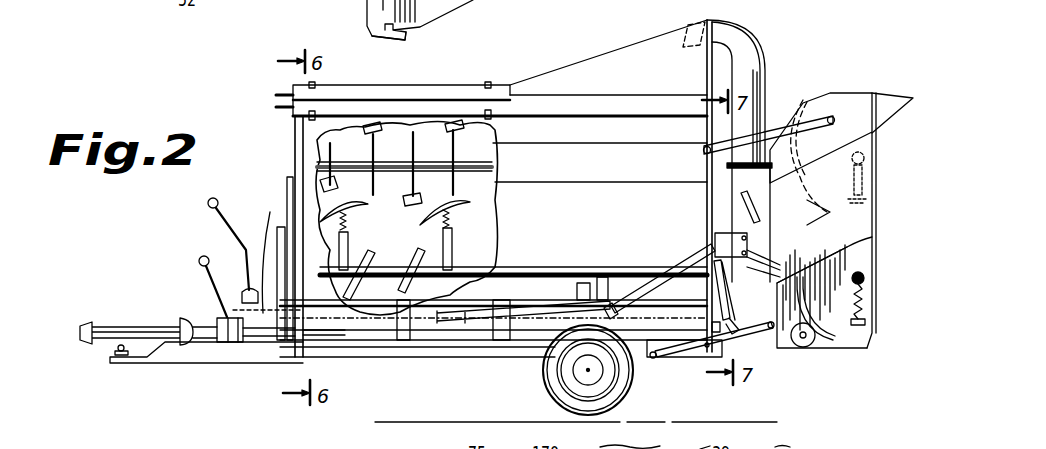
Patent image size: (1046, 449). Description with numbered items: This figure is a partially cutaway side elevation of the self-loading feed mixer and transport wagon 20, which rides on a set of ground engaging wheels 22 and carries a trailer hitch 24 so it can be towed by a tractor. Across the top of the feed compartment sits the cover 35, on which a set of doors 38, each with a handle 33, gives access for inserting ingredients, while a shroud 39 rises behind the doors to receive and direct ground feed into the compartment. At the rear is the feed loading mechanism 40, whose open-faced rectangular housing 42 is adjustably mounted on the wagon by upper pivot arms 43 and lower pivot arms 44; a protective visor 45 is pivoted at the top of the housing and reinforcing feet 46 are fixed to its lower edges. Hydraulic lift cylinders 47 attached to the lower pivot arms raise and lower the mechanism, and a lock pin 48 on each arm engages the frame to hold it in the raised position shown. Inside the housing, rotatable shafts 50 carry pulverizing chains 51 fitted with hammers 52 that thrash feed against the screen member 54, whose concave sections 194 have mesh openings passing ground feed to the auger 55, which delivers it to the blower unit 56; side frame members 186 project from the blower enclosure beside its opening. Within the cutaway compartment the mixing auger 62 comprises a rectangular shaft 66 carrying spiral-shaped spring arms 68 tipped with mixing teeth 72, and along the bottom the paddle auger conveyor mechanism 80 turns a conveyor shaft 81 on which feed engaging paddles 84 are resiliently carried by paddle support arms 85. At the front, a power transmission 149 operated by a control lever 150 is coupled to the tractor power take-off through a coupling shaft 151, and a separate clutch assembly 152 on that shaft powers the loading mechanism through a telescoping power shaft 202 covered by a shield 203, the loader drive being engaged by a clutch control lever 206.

The feed mixer and transport wagon 20 is at (282, 80).
The ground engaging wheels 22 is at (546, 393).
The trailer hitch 24 is at (116, 350).
The handle 33 is at (280, 107).
The cover 35 is at (484, 84).
The doors 38 is at (448, 104).
The shroud 39 is at (617, 50).
The feed loading mechanism 40 is at (880, 232).
The open-faced rectangular housing 42 is at (840, 94).
The upper pivot arms 43 is at (778, 135).
The lower pivot arms 44 is at (575, 0).
The protective visor 45 is at (886, 88).
The reinforcing feet 46 is at (378, 38).
The hydraulic lift cylinders 47 is at (742, 312).
The lock pin 48 is at (520, 0).
The shafts 50 is at (866, 153).
The chains 51 is at (863, 181).
The hammer 52 is at (866, 201).
The screen member 54 is at (816, 283).
The auger 55 is at (806, 347).
The blower unit 56 is at (728, 185).
The mixing auger 62 is at (350, 146).
The rectangular shaft 66 is at (467, 158).
The spiral-shaped spring arms 68 is at (372, 183).
The mixing tooth 72 is at (381, 128).
The paddle auger conveyor mechanism 80 is at (468, 241).
The conveyor shaft 81 is at (398, 278).
The feed engaging paddles 84 is at (355, 222).
The paddle support arms 85 is at (343, 250).
The power transmission 149 is at (259, 256).
The control lever 150 is at (226, 228).
The coupling shaft 151 is at (100, 330).
The clutch assembly 152 is at (210, 291).
The side frame members 186 is at (720, 300).
The concave sections 194 is at (886, 351).
The telescoping power shaft 202 is at (672, 268).
The shield 203 is at (530, 318).
The clutch control lever 206 is at (723, 208).